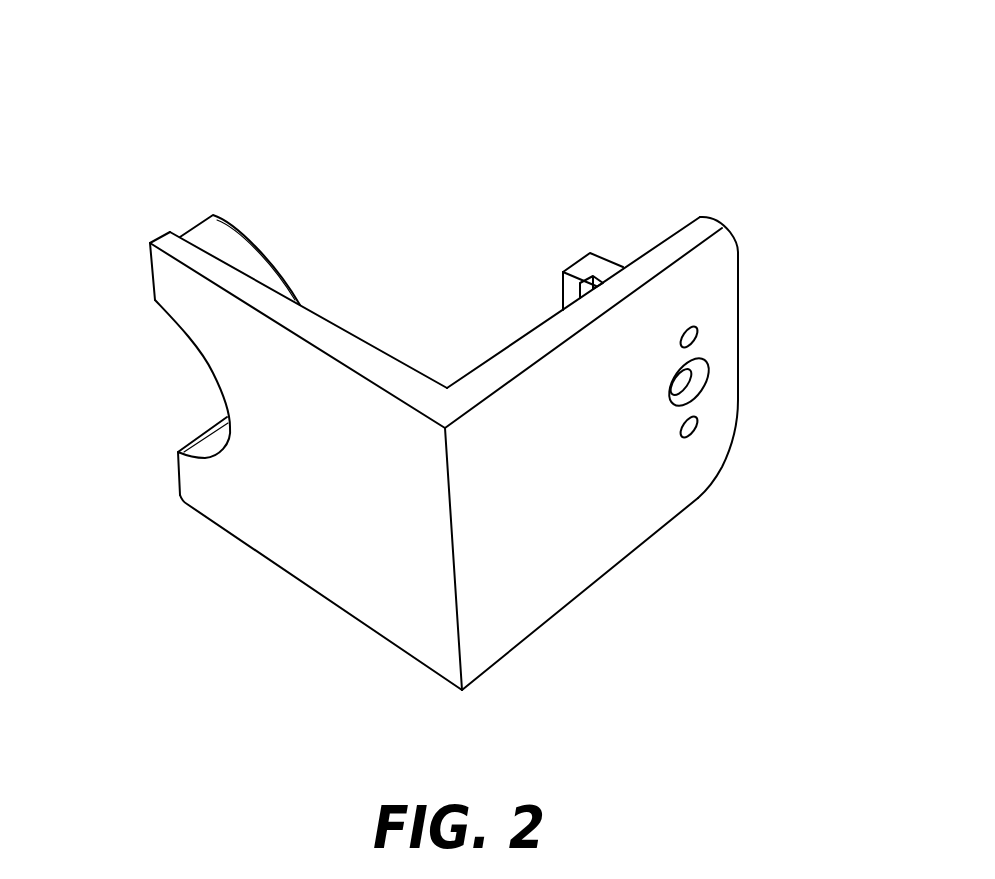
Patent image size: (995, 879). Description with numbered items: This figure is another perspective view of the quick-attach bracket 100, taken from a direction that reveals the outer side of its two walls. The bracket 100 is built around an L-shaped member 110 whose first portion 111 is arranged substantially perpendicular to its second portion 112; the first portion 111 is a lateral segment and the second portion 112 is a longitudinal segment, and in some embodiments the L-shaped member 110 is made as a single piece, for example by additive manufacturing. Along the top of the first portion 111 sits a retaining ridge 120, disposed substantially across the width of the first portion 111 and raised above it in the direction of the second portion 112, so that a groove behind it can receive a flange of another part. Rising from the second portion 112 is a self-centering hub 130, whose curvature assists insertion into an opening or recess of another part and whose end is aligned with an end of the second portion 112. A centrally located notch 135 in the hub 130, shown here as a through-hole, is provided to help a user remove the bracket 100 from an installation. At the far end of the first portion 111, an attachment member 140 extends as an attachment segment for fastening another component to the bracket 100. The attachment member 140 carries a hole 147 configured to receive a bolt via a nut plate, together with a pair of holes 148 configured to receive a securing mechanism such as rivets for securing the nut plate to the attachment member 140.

The quick-attach bracket 100 is at (163, 90).
The L-shaped member 110 is at (432, 402).
The first portion 111 is at (582, 610).
The second portion 112 is at (378, 627).
The retaining ridge 120 is at (608, 297).
The self-centering hub 130 is at (258, 278).
The notch 135 is at (176, 392).
The attachment member 140 is at (738, 292).
The hole 147 is at (700, 398).
The holes 148 is at (697, 341).